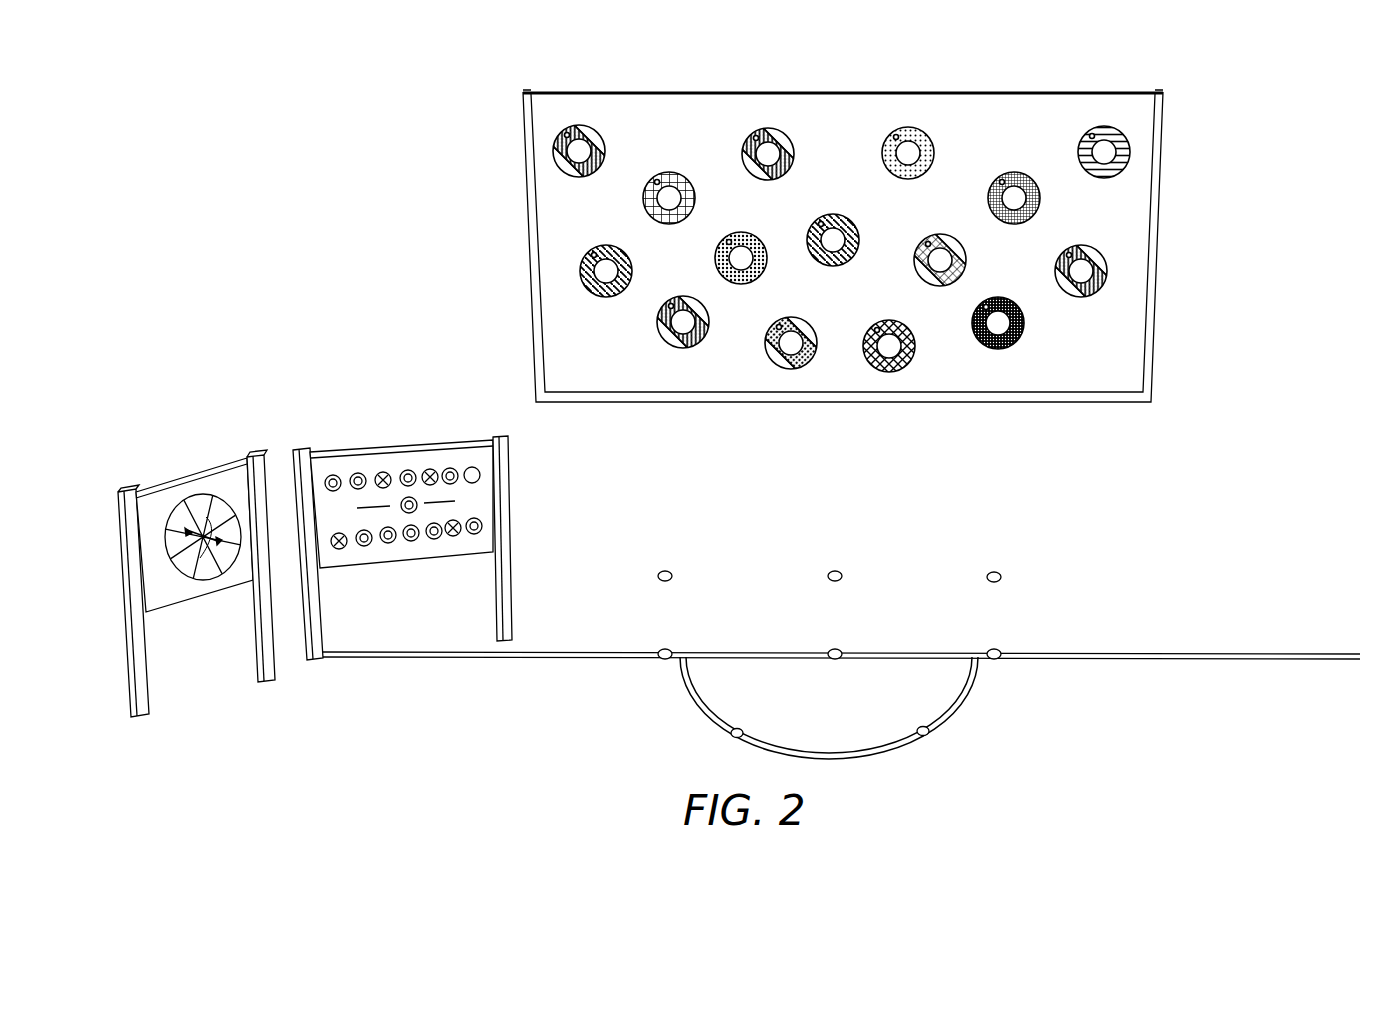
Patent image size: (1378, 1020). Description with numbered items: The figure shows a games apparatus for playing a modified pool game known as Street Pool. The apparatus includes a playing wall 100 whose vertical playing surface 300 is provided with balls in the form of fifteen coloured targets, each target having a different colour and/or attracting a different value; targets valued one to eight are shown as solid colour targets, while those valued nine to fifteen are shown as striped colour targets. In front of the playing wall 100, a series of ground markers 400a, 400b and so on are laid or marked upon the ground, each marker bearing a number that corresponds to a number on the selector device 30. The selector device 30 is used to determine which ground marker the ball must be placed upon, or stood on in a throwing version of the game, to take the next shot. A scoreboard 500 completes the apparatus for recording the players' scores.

The playing wall 100 is at (626, 66).
The vertical playing surface 300 is at (965, 112).
The selector device 30 is at (177, 465).
The scoreboard 500 is at (394, 432).
The ground marker 400a is at (927, 736).
The ground marker 400b is at (1003, 575).